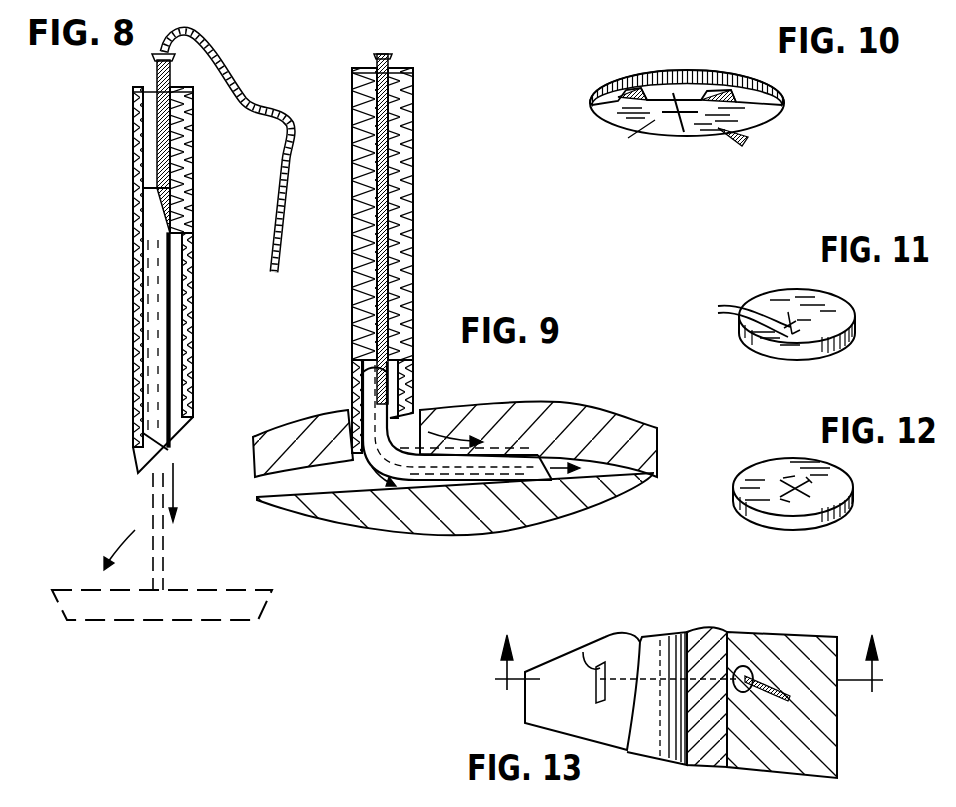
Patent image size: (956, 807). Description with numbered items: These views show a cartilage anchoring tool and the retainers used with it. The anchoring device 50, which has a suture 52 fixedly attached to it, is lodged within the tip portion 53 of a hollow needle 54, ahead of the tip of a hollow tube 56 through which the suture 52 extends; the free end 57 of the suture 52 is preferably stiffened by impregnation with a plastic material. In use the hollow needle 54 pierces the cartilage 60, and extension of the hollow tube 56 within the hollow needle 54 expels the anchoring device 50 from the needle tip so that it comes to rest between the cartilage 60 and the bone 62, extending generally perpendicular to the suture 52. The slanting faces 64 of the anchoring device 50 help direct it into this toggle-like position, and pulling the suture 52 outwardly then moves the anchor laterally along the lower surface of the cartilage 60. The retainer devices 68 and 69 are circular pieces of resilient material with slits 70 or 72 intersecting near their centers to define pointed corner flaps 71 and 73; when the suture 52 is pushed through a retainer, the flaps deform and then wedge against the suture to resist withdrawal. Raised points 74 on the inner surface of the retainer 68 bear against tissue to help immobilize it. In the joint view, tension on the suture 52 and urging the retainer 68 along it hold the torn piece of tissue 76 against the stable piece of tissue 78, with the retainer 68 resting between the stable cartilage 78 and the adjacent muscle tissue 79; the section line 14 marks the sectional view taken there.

In FIG. 13, the section line 14- 14 is at (692, 672).
In FIG. 8, the anchoring device 50 is at (170, 362).
In FIG. 9, the anchoring device 50 is at (510, 485).
In FIG. 13, the anchoring device 50 is at (583, 652).
In FIG. 8, the suture 52 is at (170, 205).
In FIG. 9, the suture 52 is at (393, 62).
In FIG. 13, the suture 52 is at (773, 698).
In FIG. 8, the tip portion 53 is at (190, 400).
In FIG. 8, the hollow needle 54 is at (192, 128).
In FIG. 9, the hollow needle 54 is at (413, 128).
In FIG. 8, the hollow tube 56 is at (143, 197).
In FIG. 9, the hollow tube 56 is at (362, 373).
In FIG. 8, the free end 57 is at (268, 238).
In FIG. 9, the cartilage 60 is at (318, 423).
In FIG. 9, the bone 62 is at (353, 520).
In FIG. 8, the slanting faces 64 is at (150, 445).
In FIG. 9, the slanting faces 64 is at (553, 482).
In FIG. 10, the retainer device 68 is at (784, 103).
In FIG. 12, the retainer device 68 is at (853, 497).
In FIG. 13, the retainer device 68 is at (752, 667).
In FIG. 11, the retainer device 69 is at (856, 327).
In FIG. 10, the slits 70 is at (683, 120).
In FIG. 12, the slits 70 is at (800, 495).
In FIG. 10, the pointed corner flaps 71 is at (690, 103).
In FIG. 11, the slits 72 is at (740, 317).
In FIG. 11, the pointed corner flaps 73 is at (791, 311).
In FIG. 10, the raised points 74 is at (713, 90).
In FIG. 13, the torn piece of tissue 76 is at (607, 737).
In FIG. 13, the stable piece of tissue 78 is at (653, 752).
In FIG. 13, the muscle tissue 79 is at (838, 743).